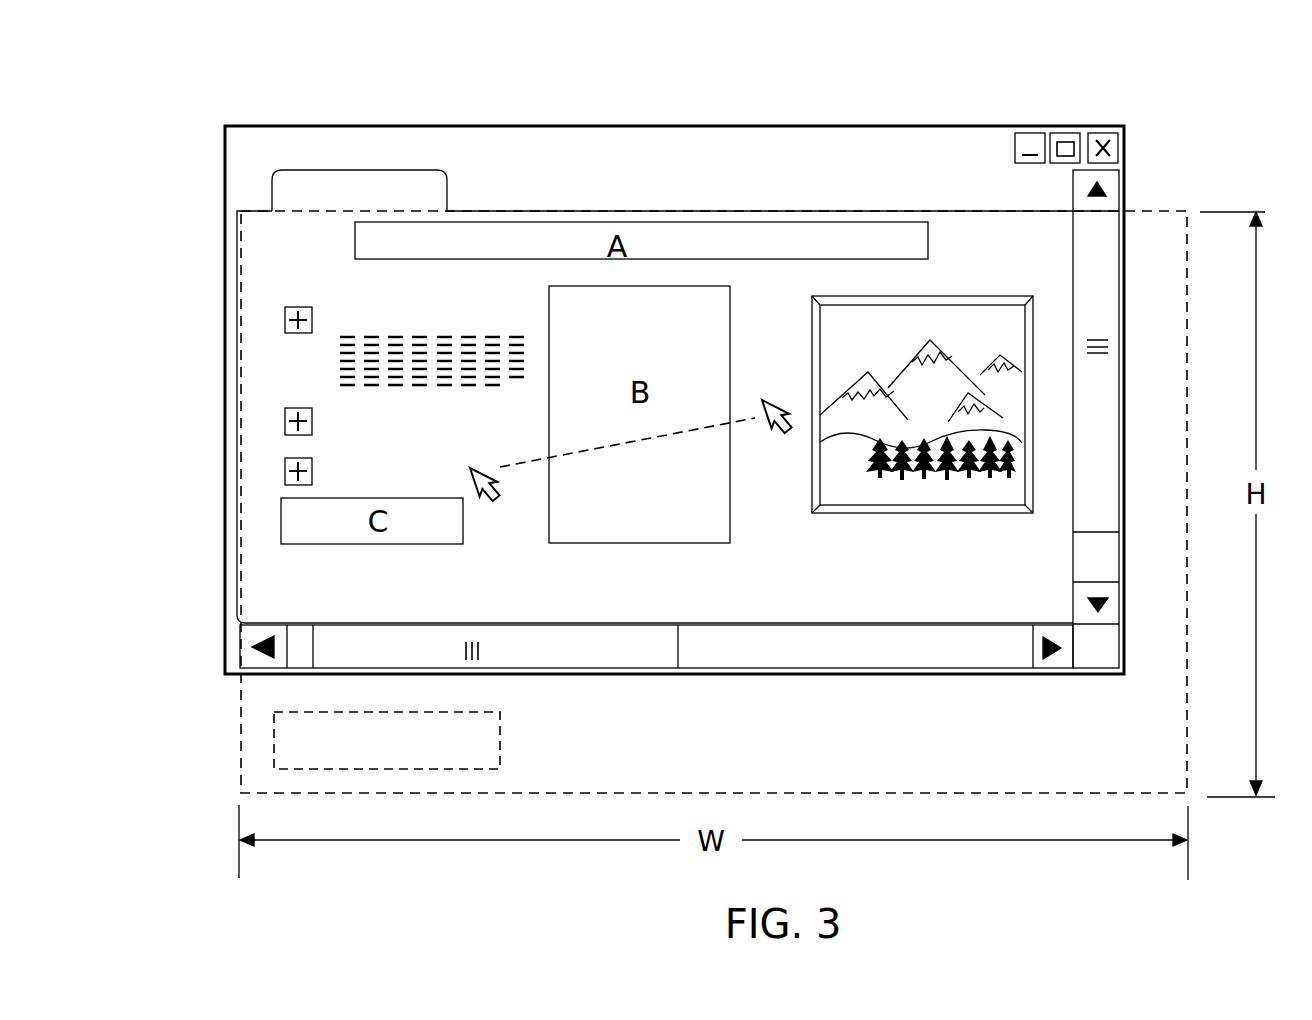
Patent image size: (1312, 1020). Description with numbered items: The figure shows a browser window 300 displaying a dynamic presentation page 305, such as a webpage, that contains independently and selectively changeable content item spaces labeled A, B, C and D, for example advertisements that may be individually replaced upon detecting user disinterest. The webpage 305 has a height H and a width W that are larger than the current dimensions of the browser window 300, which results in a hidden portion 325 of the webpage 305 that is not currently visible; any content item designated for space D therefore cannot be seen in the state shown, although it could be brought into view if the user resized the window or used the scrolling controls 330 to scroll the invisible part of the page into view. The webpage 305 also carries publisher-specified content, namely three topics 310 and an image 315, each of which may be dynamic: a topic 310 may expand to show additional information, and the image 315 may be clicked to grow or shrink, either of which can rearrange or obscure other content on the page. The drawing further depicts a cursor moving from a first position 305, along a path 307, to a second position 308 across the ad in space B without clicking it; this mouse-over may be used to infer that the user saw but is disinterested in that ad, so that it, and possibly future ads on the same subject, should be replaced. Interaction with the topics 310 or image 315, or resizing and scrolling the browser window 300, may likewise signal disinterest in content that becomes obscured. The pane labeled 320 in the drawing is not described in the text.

The browser window 300 is at (874, 102).
The dynamic presentation page 305 is at (437, 185).
The path 307 is at (527, 468).
The second position 308 is at (782, 400).
The topics 310 is at (224, 297).
The image 315 is at (903, 320).
The content area 320 is at (688, 210).
The hidden portion 325 is at (972, 793).
The scrolling controls 330 is at (1110, 190).